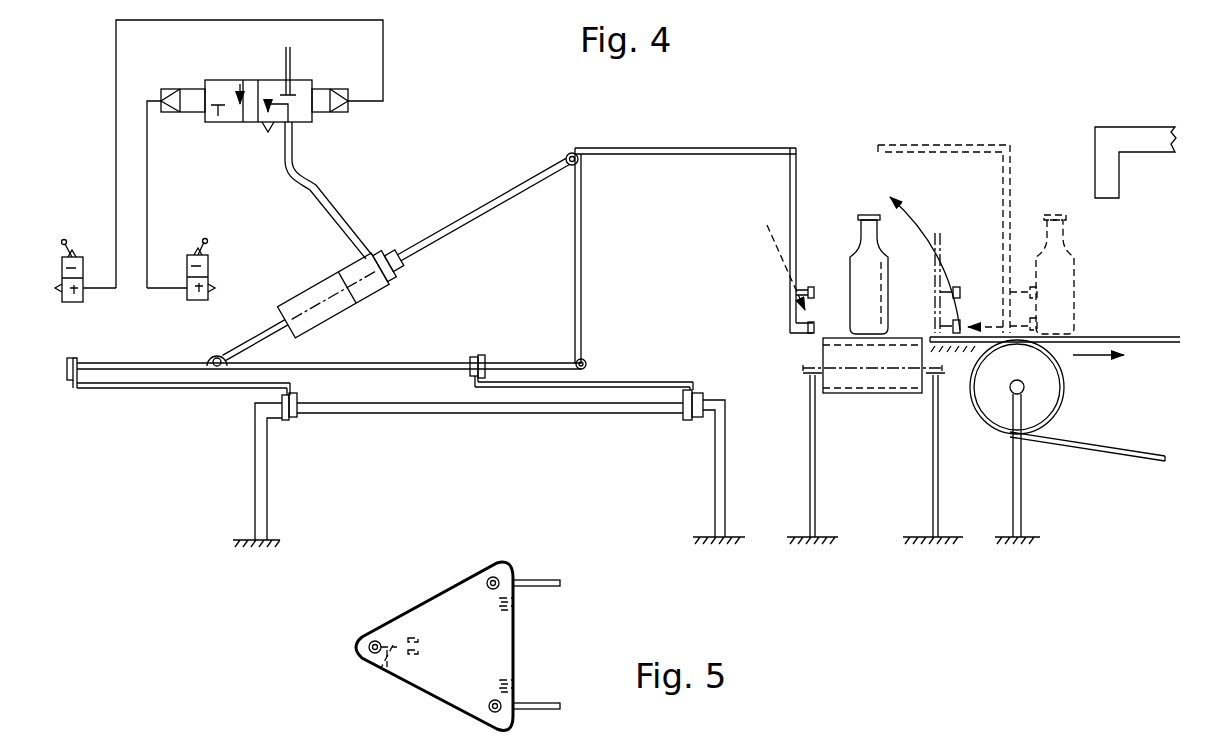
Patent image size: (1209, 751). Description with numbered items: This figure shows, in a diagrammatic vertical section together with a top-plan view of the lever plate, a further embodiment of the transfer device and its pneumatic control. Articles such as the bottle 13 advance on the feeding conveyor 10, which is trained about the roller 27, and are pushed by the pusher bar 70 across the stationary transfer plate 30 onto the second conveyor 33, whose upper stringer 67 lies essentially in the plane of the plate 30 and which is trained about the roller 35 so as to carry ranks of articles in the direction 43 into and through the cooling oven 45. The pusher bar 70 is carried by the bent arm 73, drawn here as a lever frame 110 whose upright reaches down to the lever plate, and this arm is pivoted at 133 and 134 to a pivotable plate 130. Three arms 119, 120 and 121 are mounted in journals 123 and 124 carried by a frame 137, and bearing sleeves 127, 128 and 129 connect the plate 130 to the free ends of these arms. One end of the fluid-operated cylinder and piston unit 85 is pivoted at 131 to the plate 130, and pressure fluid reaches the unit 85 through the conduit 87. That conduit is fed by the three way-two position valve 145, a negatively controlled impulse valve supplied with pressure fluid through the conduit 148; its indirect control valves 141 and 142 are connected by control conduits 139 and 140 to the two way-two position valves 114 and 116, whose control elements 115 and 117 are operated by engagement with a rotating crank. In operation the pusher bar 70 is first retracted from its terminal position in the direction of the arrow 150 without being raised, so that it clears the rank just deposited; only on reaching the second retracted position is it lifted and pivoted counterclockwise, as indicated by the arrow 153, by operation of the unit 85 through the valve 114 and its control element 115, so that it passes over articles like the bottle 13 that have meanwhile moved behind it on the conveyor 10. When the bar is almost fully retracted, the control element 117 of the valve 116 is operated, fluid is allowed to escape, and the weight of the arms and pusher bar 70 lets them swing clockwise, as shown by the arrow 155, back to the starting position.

In FIG. 4, the feeding conveyor 10 is at (905, 394).
In FIG. 4, the article 13 is at (856, 240).
In FIG. 4, the roller 27 is at (845, 382).
In FIG. 4, the transfer plate 30 is at (963, 346).
In FIG. 4, the second conveyor 33 is at (1120, 458).
In FIG. 4, the roller 35 is at (1061, 406).
In FIG. 4, the direction 43 is at (1098, 364).
In FIG. 4, the cooling oven 45 is at (1112, 138).
In FIG. 4, the upper stringer 67 is at (1115, 336).
In FIG. 4, the pusher bar 70 is at (812, 287).
In FIG. 4, the arm 73 is at (574, 268).
In FIG. 4, the cylinder and piston unit 85 is at (340, 318).
In FIG. 4, the conduit 87 is at (366, 258).
In FIG. 4, the lever frame 110 is at (636, 155).
In FIG. 4, the two way-two position valve 114 is at (60, 270).
In FIG. 4, the control element 115 is at (72, 232).
In FIG. 4, the two way-two position valve 116 is at (210, 272).
In FIG. 4, the control element 117 is at (205, 241).
In FIG. 4, the arm 119 is at (612, 380).
In FIG. 5, the arm 119 is at (543, 703).
In FIG. 5, the arm 120 is at (536, 580).
In FIG. 4, the arm 121 is at (200, 392).
In FIG. 5, the arm 121 is at (380, 668).
In FIG. 4, the journal 123 is at (682, 420).
In FIG. 4, the journal 124 is at (294, 421).
In FIG. 4, the bearing sleeve 127 is at (480, 355).
In FIG. 5, the bearing sleeve 127 is at (489, 707).
In FIG. 5, the bearing sleeve 128 is at (492, 577).
In FIG. 4, the bearing sleeve 129 is at (76, 362).
In FIG. 5, the bearing sleeve 129 is at (369, 647).
In FIG. 4, the pivotable plate 130 is at (406, 362).
In FIG. 5, the pivotable plate 130 is at (410, 600).
In FIG. 4, the pivot 131 is at (217, 354).
In FIG. 5, the pivot 131 is at (418, 640).
In FIG. 5, the pivot 133 is at (514, 678).
In FIG. 5, the pivot 134 is at (514, 608).
In FIG. 4, the frame 137 is at (632, 412).
In FIG. 4, the control conduit 139 is at (224, 22).
In FIG. 4, the control conduit 140 is at (147, 228).
In FIG. 4, the indirect control valve 141 is at (322, 113).
In FIG. 4, the indirect control valve 142 is at (188, 113).
In FIG. 4, the three way-two position valve 145 is at (324, 74).
In FIG. 4, the conduit 148 is at (291, 62).
In FIG. 4, the arrow 150 is at (993, 326).
In FIG. 4, the arrow 153 is at (920, 228).
In FIG. 4, the arrow 155 is at (781, 250).